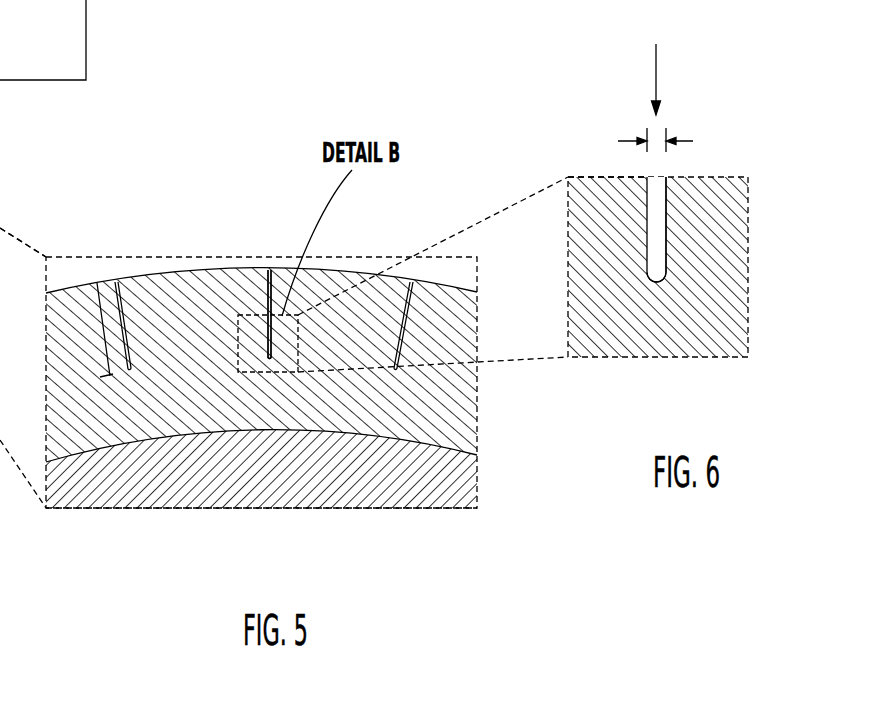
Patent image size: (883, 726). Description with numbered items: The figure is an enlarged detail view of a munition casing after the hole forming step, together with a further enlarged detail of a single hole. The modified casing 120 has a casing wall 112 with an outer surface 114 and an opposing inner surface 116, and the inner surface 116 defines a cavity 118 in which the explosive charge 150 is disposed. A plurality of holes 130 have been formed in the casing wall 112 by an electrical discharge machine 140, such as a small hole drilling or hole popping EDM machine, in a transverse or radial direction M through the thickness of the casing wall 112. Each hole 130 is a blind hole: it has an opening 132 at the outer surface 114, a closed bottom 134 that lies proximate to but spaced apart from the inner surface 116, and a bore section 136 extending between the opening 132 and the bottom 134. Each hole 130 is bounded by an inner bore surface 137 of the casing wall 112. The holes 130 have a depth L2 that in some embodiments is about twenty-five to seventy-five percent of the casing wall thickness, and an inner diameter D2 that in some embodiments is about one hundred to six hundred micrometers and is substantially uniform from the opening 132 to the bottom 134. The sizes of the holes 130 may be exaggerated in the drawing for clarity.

In FIG. 5, the casing wall 112 is at (453, 413).
In FIG. 6, the casing wall 112 is at (727, 328).
In FIG. 5, the outer surface 114 is at (173, 275).
In FIG. 6, the outer surface 114 is at (593, 177).
In FIG. 5, the inner surface 116 is at (97, 452).
In FIG. 5, the cavity 118 is at (150, 502).
In FIG. 5, the modified casing 120 is at (367, 258).
In FIG. 6, the modified casing 120 is at (786, 243).
In FIG. 5, the holes 130 is at (134, 303).
In FIG. 6, the holes 130 is at (690, 210).
In FIG. 5, the opening 132 is at (267, 270).
In FIG. 5, the closed bottom 134 is at (273, 345).
In FIG. 6, the closed bottom 134 is at (659, 284).
In FIG. 6, the bore section 136 is at (667, 266).
In FIG. 6, the inner bore surface 137 is at (657, 178).
In FIG. 5, the electrical discharge machine 140 is at (47, 41).
In FIG. 5, the explosive charge 150 is at (457, 480).
In FIG. 5, the depth L2 is at (100, 328).
In FIG. 6, the transverse or radial direction M is at (656, 66).
In FIG. 6, the inner diameter D2 is at (687, 138).